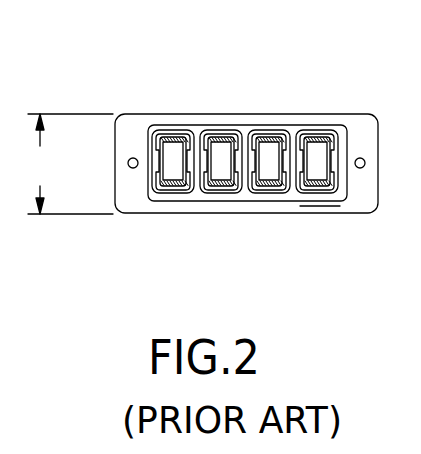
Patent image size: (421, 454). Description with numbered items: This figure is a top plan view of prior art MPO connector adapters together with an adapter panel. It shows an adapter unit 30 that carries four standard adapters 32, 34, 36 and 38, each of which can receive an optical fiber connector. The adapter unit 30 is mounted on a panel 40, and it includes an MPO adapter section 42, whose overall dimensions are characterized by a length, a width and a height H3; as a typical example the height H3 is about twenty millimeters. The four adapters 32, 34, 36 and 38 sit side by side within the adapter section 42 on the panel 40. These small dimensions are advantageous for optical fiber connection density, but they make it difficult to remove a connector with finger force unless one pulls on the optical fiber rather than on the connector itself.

The adapter unit 30 is at (236, 113).
The standard adapter 32 is at (162, 134).
The standard adapter 34 is at (216, 134).
The standard adapter 36 is at (275, 134).
The standard adapter 38 is at (320, 134).
The panel 40 is at (215, 204).
The MPO adapter section 42 is at (318, 206).
The height H3 is at (70, 164).